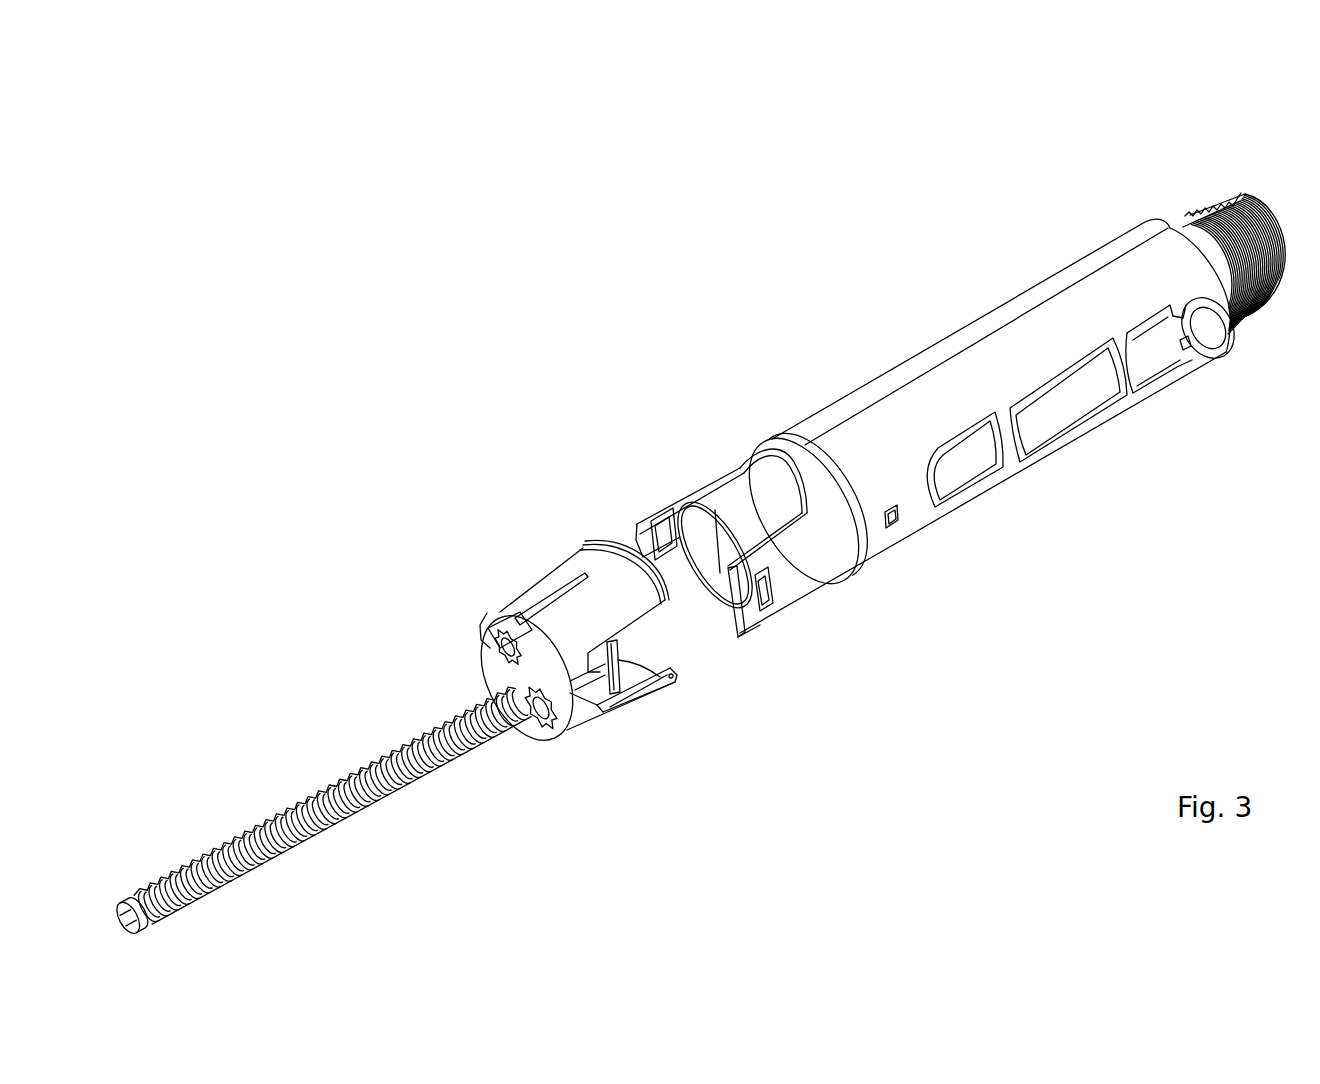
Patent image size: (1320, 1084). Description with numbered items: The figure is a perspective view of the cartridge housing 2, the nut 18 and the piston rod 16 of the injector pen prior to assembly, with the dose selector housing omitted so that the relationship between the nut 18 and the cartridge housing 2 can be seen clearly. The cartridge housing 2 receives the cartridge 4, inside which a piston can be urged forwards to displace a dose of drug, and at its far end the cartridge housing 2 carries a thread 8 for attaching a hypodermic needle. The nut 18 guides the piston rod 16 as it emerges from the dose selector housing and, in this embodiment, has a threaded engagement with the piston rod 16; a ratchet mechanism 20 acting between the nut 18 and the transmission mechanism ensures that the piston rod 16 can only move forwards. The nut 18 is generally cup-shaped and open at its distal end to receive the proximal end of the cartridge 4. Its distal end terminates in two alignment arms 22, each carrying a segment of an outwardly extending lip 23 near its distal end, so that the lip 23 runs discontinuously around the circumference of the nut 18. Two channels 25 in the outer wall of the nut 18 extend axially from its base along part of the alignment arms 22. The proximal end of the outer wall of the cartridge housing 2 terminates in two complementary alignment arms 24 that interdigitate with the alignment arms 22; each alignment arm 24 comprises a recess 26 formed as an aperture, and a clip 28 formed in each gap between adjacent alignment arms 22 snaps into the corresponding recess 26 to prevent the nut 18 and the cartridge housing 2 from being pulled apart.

The cartridge housing 2 is at (982, 362).
The cartridge 4 is at (736, 496).
The thread 8 is at (1203, 212).
The piston rod 16 is at (375, 745).
The nut 18 is at (585, 722).
The ratchet mechanism 20 is at (478, 622).
The alignment arms 22 is at (640, 595).
The lip 23 is at (598, 545).
The alignment arms 24 is at (650, 512).
The channels 25 is at (537, 600).
The recess 26 is at (767, 612).
The clip 28 is at (626, 688).